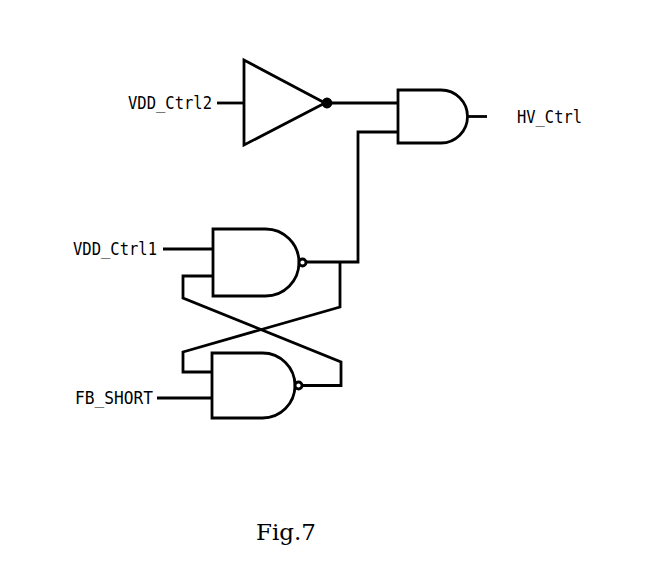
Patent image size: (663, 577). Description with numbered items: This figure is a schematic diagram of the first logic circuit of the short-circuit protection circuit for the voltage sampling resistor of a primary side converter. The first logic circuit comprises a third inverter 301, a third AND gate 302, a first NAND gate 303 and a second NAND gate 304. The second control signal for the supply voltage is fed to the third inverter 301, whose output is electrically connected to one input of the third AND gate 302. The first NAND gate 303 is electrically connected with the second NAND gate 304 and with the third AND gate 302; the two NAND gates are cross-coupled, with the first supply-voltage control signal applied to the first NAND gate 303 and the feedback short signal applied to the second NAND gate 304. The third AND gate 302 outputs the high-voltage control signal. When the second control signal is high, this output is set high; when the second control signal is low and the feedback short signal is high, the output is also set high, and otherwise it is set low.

The third inverter 301 is at (287, 80).
The third AND gate 302 is at (428, 90).
The first NAND gate 303 is at (255, 232).
The second NAND gate 304 is at (253, 418).